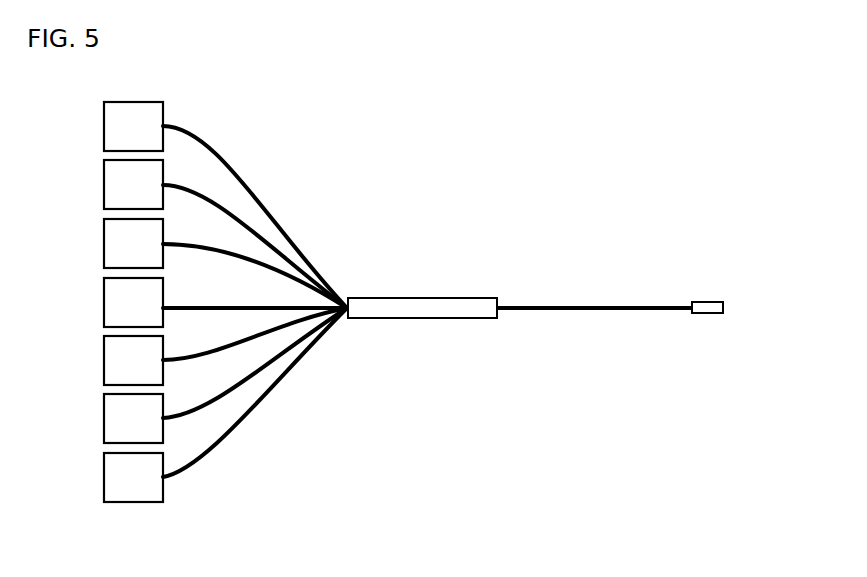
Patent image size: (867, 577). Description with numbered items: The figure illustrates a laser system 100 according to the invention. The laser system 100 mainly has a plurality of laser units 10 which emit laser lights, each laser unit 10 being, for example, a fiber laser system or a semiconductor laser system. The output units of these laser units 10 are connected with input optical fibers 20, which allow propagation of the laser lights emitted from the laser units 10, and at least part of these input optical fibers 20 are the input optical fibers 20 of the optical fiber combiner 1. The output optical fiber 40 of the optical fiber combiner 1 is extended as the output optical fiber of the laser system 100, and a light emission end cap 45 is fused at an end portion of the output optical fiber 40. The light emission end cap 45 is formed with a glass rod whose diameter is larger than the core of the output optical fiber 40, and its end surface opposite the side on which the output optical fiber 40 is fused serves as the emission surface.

The laser unit 10 is at (115, 117).
The input optical fiber 20 is at (218, 155).
The optical fiber combiner 1 is at (468, 303).
The output optical fiber 40 is at (582, 305).
The light emission end cap 45 is at (717, 307).
The laser system 100 is at (597, 118).